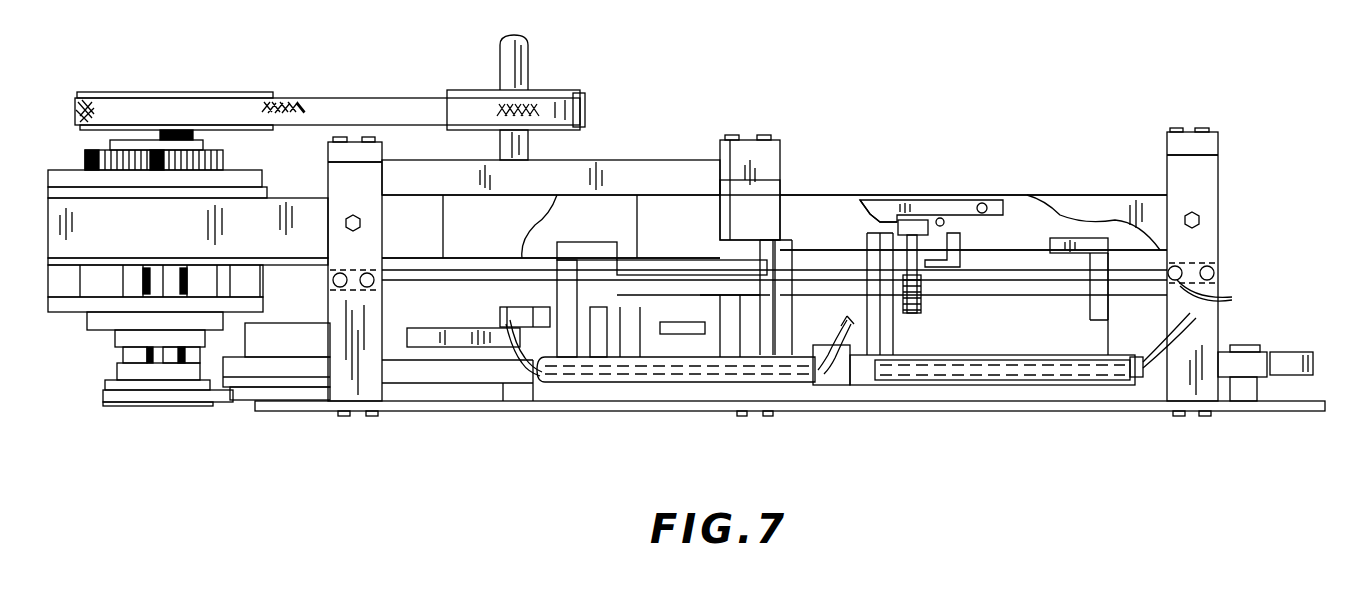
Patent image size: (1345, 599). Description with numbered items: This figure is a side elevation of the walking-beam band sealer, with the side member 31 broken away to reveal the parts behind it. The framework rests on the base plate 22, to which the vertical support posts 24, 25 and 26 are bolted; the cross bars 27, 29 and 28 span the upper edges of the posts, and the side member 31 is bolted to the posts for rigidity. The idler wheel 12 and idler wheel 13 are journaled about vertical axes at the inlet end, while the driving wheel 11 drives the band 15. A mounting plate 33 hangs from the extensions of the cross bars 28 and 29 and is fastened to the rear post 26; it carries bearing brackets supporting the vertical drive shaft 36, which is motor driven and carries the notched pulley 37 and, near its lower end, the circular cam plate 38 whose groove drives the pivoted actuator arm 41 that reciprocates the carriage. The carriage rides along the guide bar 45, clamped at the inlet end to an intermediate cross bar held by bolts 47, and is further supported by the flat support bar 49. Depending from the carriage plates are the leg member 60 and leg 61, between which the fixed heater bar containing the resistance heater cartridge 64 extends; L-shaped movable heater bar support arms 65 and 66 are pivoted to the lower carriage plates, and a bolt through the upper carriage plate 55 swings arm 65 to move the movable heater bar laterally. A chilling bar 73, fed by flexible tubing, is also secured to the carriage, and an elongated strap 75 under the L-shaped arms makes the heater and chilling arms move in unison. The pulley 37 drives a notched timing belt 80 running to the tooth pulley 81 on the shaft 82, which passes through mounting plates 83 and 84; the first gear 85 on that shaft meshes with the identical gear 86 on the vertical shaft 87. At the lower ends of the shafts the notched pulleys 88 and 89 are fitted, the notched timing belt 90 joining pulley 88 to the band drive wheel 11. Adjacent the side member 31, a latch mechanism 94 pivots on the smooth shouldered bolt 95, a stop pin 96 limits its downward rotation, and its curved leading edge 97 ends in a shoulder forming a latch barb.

The driving wheel 11 is at (318, 351).
The idler wheel 12 is at (1295, 358).
The idler wheel 13 is at (1252, 375).
The band 15 is at (472, 372).
The base plate 22 is at (928, 411).
The support post 24 is at (1210, 191).
The support post 25 is at (372, 194).
The support post 26 is at (778, 182).
The cross bar 27 is at (1212, 146).
The cross bar 28 is at (778, 150).
The cross bar 29 is at (385, 158).
The side member 31 is at (1093, 222).
The mounting plate 33 is at (607, 226).
The drive shaft 36 is at (500, 58).
The notched pulley 37 is at (560, 90).
The circular cam plate 38 is at (438, 345).
The actuator arm 41 is at (647, 330).
The guide bar 45 is at (420, 280).
The bolts 47 is at (1204, 324).
The support bar 49 is at (418, 258).
The upper carriage plate 55 is at (925, 262).
The leg member 60 is at (915, 342).
The leg 61 is at (1090, 321).
The resistance heater cartridge 64 is at (1010, 380).
The movable heater bar support arm 65 is at (880, 331).
The movable heater bar support arm 66 is at (1100, 338).
The chilling bar 73 is at (712, 380).
The elongated strap 75 is at (824, 350).
The notched timing belt 80 is at (356, 96).
The tooth pulley 81 is at (246, 92).
The shaft 82 is at (195, 138).
The mounting plate 83 is at (120, 212).
The mounting plate 84 is at (68, 305).
The first gear 85 is at (224, 160).
The gear 86 is at (85, 157).
The vertical shaft 87 is at (128, 352).
The notched pulley 88 is at (128, 404).
The notched pulley 89 is at (188, 408).
The notched timing belt 90 is at (222, 406).
The latch mechanism 94 is at (960, 200).
The smooth shouldered bolt 95 is at (984, 204).
The stop pin 96 is at (940, 218).
The leading edge 97 is at (866, 210).